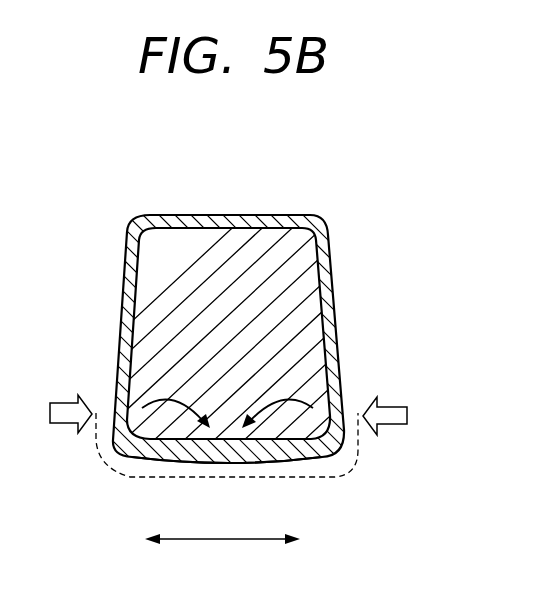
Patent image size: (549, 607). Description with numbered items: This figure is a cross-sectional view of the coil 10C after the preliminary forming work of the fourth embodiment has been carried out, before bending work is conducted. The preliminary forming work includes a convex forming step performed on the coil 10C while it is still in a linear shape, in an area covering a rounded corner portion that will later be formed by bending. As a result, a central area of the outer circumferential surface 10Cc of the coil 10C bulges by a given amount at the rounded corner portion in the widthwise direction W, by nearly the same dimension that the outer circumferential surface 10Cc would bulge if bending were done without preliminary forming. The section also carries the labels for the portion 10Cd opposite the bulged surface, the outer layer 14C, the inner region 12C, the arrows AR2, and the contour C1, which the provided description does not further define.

The coil 10C is at (274, 339).
The upper wall portion of duct 10Cd is at (209, 217).
The outer circumferential surface 10Cc is at (168, 460).
The wall of duct 14C is at (322, 243).
The inner hatched region (filling) 12C is at (322, 298).
The compression direction arrows AR2 is at (391, 398).
The original contour (before deformation) C1 is at (357, 462).
The widthwise direction W is at (266, 539).